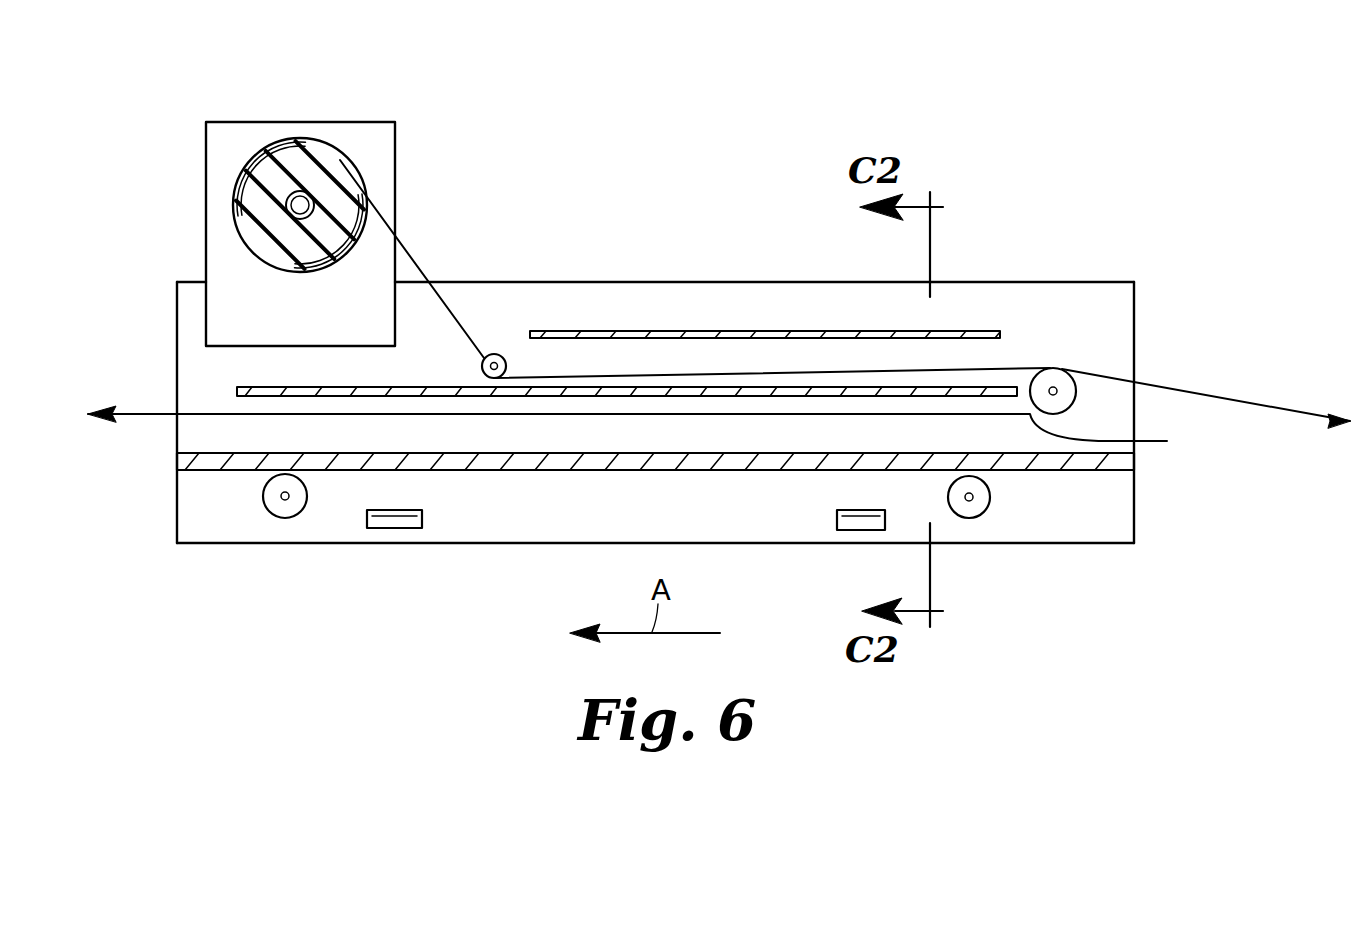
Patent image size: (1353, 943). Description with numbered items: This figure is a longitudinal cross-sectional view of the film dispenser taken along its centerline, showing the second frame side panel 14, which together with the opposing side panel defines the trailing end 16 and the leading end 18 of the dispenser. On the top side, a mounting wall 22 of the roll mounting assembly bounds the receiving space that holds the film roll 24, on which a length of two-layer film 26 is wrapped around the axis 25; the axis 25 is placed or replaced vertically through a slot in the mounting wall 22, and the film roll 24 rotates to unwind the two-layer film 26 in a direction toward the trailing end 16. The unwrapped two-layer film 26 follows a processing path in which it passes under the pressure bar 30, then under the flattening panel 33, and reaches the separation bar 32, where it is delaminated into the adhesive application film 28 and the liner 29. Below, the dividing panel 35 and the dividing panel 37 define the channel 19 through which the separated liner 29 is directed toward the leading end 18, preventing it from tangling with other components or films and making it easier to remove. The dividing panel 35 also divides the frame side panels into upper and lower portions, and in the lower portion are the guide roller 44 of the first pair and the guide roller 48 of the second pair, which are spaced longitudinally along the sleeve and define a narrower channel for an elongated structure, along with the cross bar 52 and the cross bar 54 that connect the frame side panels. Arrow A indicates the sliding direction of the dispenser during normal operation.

The second frame side panel 14 is at (640, 280).
The trailing end 16 is at (1136, 512).
The leading end 18 is at (170, 505).
The channel 19 is at (578, 433).
The mounting wall 22 is at (335, 122).
The film roll 24 is at (340, 158).
The axis 25 is at (297, 208).
The two-layer film 26 is at (280, 138).
The adhesive application film 28 is at (1198, 392).
The liner 29 is at (646, 433).
The pressure bar 30 is at (493, 353).
The separation bar 32 is at (1053, 378).
The flattening panel 33 is at (735, 335).
The dividing panel 35 is at (748, 470).
The dividing panel 37 is at (308, 387).
The guide roller 44 is at (399, 528).
The guide roller 48 is at (857, 530).
The cross bar 52 is at (970, 510).
The cross bar 54 is at (285, 508).